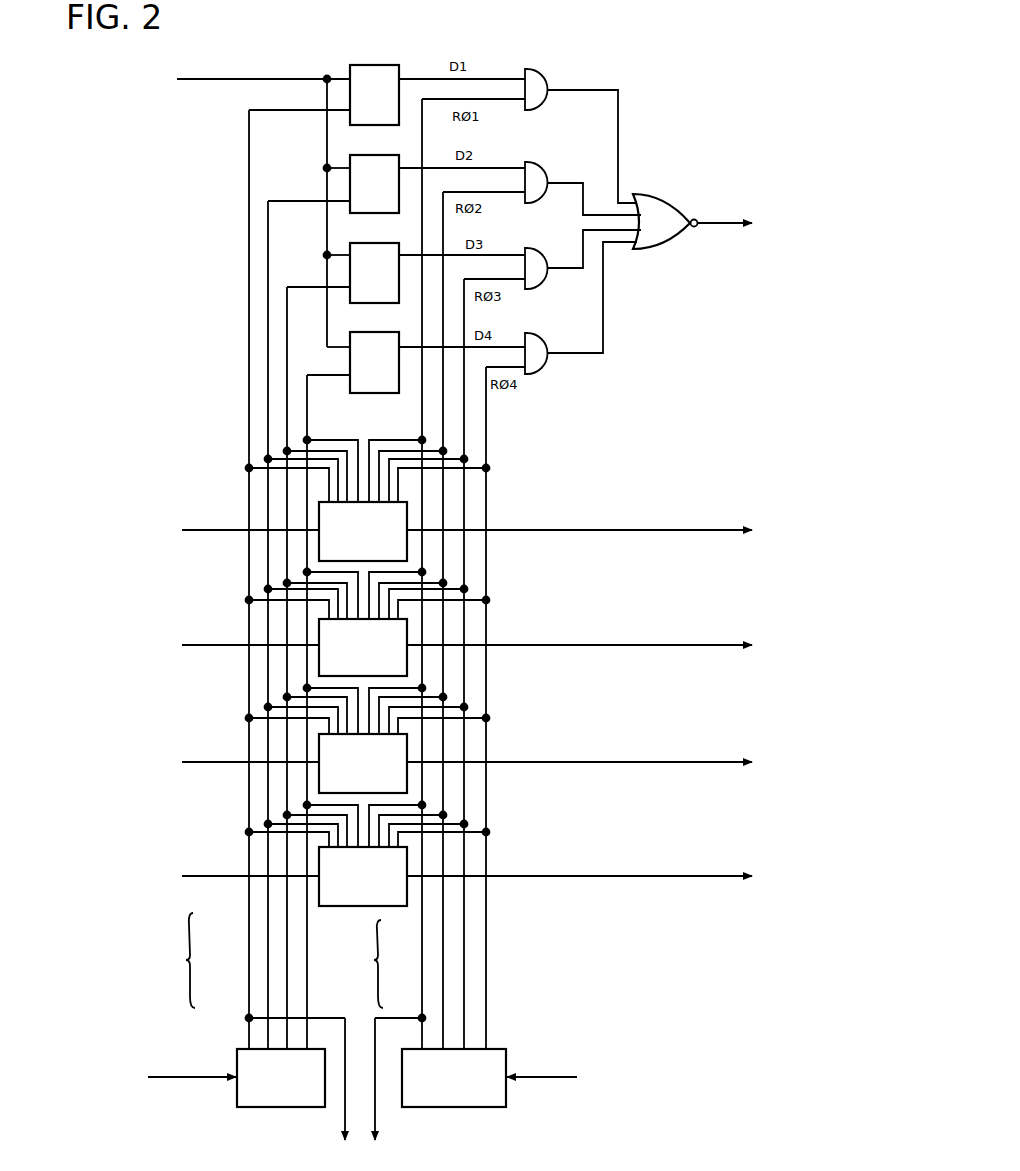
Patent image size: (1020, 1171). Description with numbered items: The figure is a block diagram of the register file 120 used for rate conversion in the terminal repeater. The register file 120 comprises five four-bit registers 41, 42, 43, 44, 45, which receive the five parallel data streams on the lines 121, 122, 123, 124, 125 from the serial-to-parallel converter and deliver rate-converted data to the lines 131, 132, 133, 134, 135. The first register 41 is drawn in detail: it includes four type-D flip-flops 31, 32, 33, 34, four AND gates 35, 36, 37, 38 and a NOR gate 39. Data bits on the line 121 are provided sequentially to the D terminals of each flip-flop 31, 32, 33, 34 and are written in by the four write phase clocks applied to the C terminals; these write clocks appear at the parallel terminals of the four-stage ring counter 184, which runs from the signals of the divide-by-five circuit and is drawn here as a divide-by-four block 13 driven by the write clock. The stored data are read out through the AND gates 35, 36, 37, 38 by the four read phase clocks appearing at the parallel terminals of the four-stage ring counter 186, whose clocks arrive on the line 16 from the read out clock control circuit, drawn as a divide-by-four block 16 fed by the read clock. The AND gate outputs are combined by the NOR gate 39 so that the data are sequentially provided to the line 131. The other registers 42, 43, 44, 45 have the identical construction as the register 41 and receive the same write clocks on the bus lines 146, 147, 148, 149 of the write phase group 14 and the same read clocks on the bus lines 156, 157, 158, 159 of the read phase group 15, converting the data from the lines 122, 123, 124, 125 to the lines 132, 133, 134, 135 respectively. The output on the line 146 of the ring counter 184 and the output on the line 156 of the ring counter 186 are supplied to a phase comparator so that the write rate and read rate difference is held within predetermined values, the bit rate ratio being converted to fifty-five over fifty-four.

The divide-by-four write clock divider 13 is at (193, 1080).
The write phase lines group 14 is at (180, 960).
The read phase lines group 15 is at (367, 964).
The line 16 is at (540, 1080).
The type-D flip-flop 31 is at (393, 64).
The type-D flip-flop 32 is at (380, 155).
The type-D flip-flop 33 is at (380, 243).
The type-D flip-flop 34 is at (396, 331).
The AND gate 35 is at (549, 77).
The AND gate 36 is at (547, 165).
The AND gate 37 is at (545, 246).
The AND gate 38 is at (547, 337).
The NOR gate 39 is at (653, 192).
The 4 bit register 41 is at (640, 353).
The 4 bit register 42 is at (407, 519).
The 4 bit register 43 is at (407, 635).
The 4 bit register 44 is at (407, 750).
The 4 bit register 45 is at (407, 863).
The register file 120 is at (551, 968).
The line 121 is at (234, 76).
The line 122 is at (209, 527).
The line 123 is at (224, 643).
The line 124 is at (224, 760).
The line 125 is at (209, 873).
The line 131 is at (727, 219).
The line 132 is at (658, 527).
The line 133 is at (653, 642).
The line 134 is at (653, 759).
The line 135 is at (653, 873).
The line 146 is at (249, 945).
The write phase line WØ2 147 is at (268, 915).
The write phase line WØ3 148 is at (287, 960).
The write phase line WØ4 149 is at (307, 980).
The line 156 is at (422, 979).
The read phase line RØ2 157 is at (443, 927).
The read phase line RØ3 158 is at (464, 947).
The read phase line RØ4 159 is at (486, 995).
The 4 stage ring counter 184 is at (258, 1109).
The 4-stage ring counter 186 is at (440, 1109).